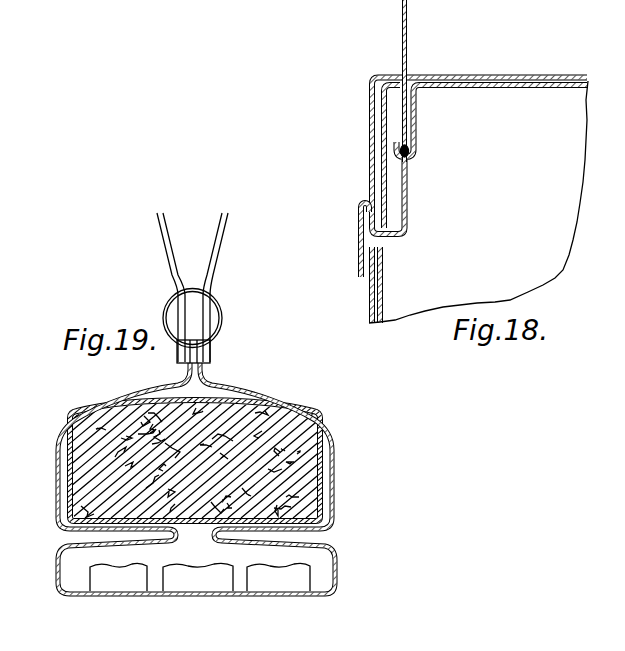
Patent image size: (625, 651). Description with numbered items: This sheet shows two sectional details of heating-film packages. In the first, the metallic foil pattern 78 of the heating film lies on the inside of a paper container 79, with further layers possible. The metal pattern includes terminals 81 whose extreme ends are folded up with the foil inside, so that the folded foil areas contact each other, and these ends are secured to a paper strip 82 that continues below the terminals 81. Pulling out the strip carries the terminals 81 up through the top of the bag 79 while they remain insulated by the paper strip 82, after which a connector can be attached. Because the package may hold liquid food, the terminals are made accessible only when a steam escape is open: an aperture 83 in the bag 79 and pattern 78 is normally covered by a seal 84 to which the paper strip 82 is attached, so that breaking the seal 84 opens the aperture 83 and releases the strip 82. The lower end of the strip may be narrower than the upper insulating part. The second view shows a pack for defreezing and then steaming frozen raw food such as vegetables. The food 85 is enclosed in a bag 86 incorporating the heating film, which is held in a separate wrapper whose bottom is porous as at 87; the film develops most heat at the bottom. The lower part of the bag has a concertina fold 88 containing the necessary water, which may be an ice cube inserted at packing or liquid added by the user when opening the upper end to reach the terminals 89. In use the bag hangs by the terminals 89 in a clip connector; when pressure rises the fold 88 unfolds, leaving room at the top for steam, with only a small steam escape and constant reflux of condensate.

In FIG. 18, the metallic foil pattern 78 is at (520, 89).
In FIG. 18, the paper container 79 is at (525, 75).
In FIG. 18, the terminals 81 is at (410, 137).
In FIG. 18, the paper strip 82 is at (407, 49).
In FIG. 18, the aperture 83 is at (359, 230).
In FIG. 18, the seal 84 is at (357, 273).
In FIG. 19, the food 85 is at (275, 463).
In FIG. 19, the bag 86 is at (288, 397).
In FIG. 19, the porous bottom of wrapper 87 is at (318, 536).
In FIG. 19, the concertina fold 88 is at (219, 537).
In FIG. 19, the terminals 89 is at (190, 359).